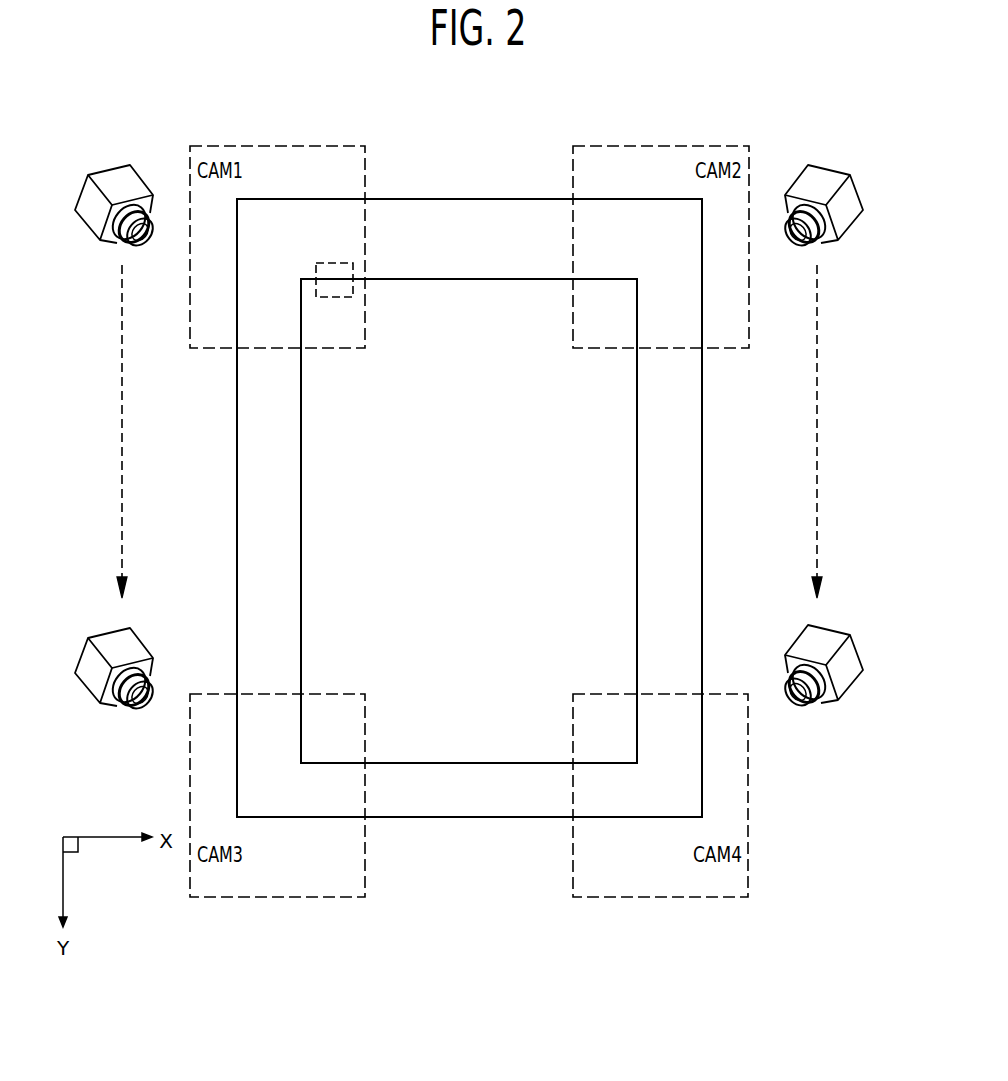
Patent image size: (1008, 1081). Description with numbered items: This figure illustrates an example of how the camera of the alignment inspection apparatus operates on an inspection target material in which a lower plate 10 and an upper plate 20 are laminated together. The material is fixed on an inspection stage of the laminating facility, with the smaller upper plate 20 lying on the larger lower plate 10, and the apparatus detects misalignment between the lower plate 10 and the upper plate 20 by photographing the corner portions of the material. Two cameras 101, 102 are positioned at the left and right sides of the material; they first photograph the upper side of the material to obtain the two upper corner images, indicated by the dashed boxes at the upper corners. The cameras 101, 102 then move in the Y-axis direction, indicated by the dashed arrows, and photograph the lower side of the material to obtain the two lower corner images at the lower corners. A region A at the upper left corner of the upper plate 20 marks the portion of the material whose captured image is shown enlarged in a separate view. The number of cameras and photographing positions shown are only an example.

The lower plate 10 is at (510, 818).
The upper plate 20 is at (470, 764).
The camera 101 is at (115, 175).
The camera 102 is at (823, 173).
The region A is at (336, 260).